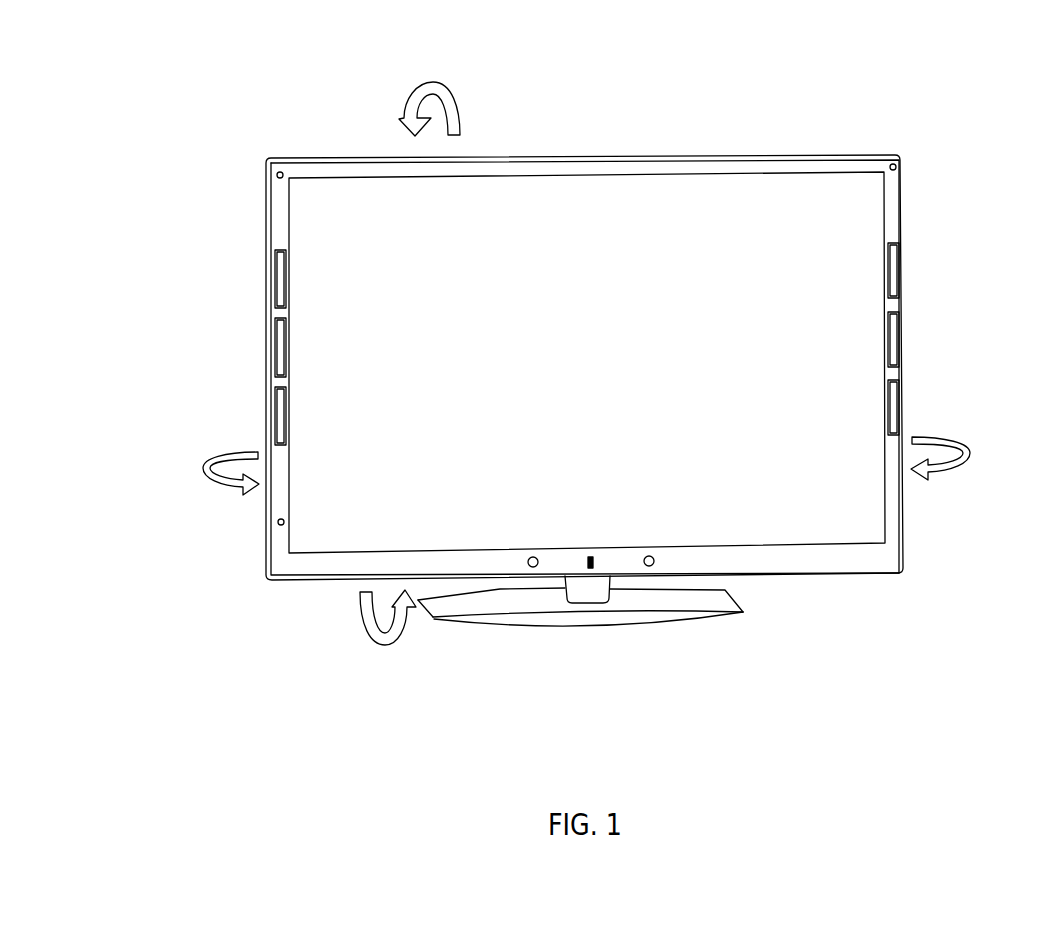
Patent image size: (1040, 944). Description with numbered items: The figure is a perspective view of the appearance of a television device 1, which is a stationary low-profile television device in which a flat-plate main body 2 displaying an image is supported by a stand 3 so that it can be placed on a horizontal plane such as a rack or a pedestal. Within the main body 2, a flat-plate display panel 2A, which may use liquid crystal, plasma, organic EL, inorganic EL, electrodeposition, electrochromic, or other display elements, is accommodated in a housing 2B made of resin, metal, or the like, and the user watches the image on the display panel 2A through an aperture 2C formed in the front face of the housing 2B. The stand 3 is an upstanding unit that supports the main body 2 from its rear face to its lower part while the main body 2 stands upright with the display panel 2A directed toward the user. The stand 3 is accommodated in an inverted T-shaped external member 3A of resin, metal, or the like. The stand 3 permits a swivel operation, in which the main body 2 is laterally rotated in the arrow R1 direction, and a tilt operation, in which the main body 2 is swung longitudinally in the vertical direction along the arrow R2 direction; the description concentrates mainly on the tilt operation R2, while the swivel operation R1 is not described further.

The television device 1 is at (904, 95).
The main body 2 is at (930, 339).
The display panel 2A is at (858, 276).
The housing 2B is at (894, 307).
The aperture 2C is at (875, 342).
The stand 3 is at (580, 632).
The external member 3A is at (499, 603).
The swivel operation direction R1 is at (202, 468).
The tilt operation direction R2 is at (461, 108).